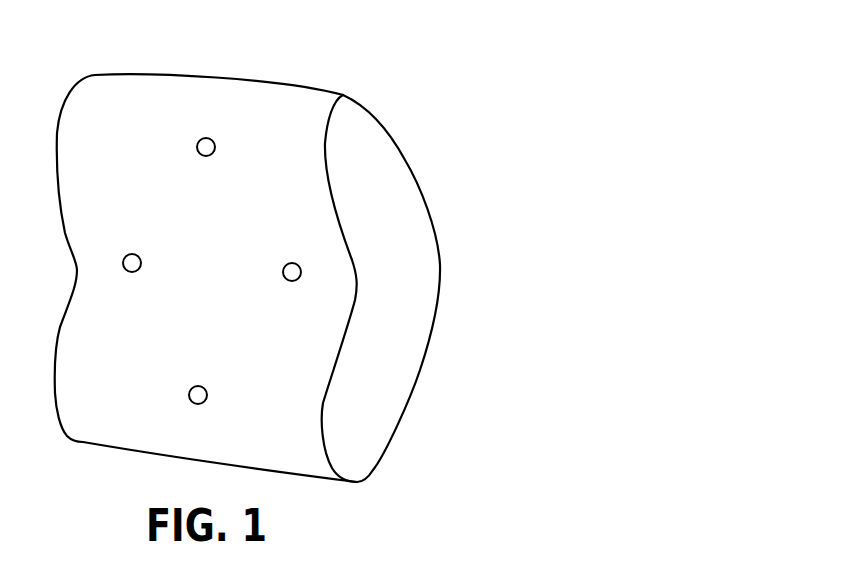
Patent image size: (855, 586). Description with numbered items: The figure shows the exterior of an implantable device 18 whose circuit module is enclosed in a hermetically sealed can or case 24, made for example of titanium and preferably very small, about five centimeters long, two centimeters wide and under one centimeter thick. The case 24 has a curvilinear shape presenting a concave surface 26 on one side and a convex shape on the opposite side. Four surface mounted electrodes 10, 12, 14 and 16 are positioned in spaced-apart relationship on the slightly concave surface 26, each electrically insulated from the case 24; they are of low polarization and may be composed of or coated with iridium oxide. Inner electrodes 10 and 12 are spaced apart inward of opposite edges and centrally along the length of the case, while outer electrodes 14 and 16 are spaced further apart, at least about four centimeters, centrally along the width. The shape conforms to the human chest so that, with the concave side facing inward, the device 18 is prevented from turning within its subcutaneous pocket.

The inner electrode 10 is at (123, 260).
The inner electrode 12 is at (283, 267).
The outer electrode 14 is at (197, 140).
The outer electrode 16 is at (188, 388).
The device 18 is at (433, 73).
The case 24 is at (407, 235).
The concave surface 26 is at (333, 292).